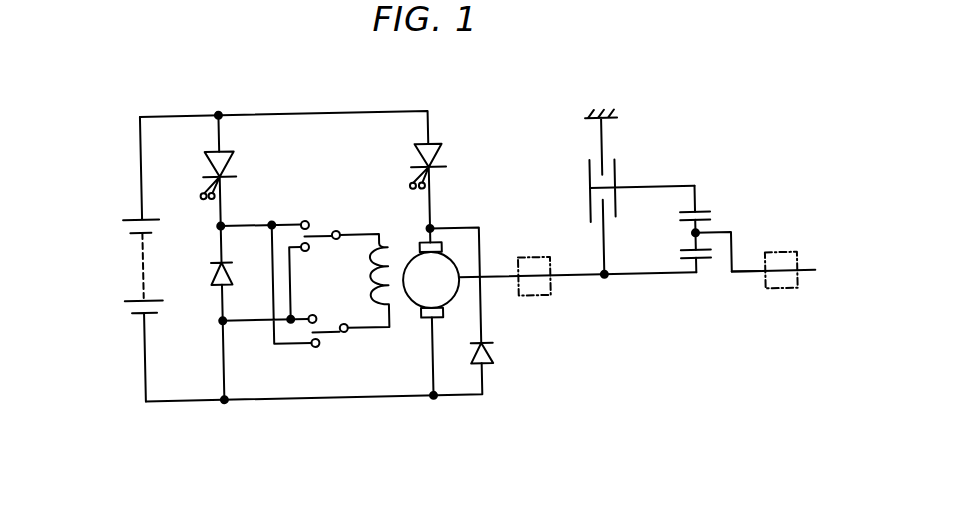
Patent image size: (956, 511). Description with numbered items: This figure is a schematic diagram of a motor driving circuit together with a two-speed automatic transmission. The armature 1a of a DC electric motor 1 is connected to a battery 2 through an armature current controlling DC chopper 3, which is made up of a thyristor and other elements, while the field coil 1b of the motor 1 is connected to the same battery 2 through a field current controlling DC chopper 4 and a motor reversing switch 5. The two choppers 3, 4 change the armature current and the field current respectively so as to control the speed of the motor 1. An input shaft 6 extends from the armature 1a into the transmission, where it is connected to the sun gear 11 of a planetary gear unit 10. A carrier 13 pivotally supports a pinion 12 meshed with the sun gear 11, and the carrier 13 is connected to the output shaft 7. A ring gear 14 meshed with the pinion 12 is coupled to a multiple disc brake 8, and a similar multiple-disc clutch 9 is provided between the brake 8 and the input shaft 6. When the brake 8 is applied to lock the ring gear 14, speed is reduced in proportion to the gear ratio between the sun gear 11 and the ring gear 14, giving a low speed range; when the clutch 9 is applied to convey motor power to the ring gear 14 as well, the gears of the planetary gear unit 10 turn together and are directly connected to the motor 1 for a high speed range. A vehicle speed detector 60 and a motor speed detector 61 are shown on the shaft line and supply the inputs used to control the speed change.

The DC electric motor 1 is at (405, 312).
The armature 1a is at (443, 297).
The field coil 1b is at (372, 278).
The battery 2 is at (130, 229).
The armature current controlling DC chopper 3 is at (440, 158).
The field current controlling DC chopper 4 is at (234, 164).
The motor reversing switch 5 is at (323, 230).
The input shaft 6 is at (606, 206).
The output shaft 7 is at (747, 279).
The multiple disc brake 8 is at (617, 171).
The multiple-disc clutch 9 is at (593, 213).
The planetary gear unit 10 is at (701, 224).
The sun gear 11 is at (703, 272).
The pinion 12 is at (685, 252).
The carrier 13 is at (718, 238).
The ring gear 14 is at (699, 206).
The vehicle speed detector 60 is at (771, 298).
The motor speed detector 61 is at (521, 296).